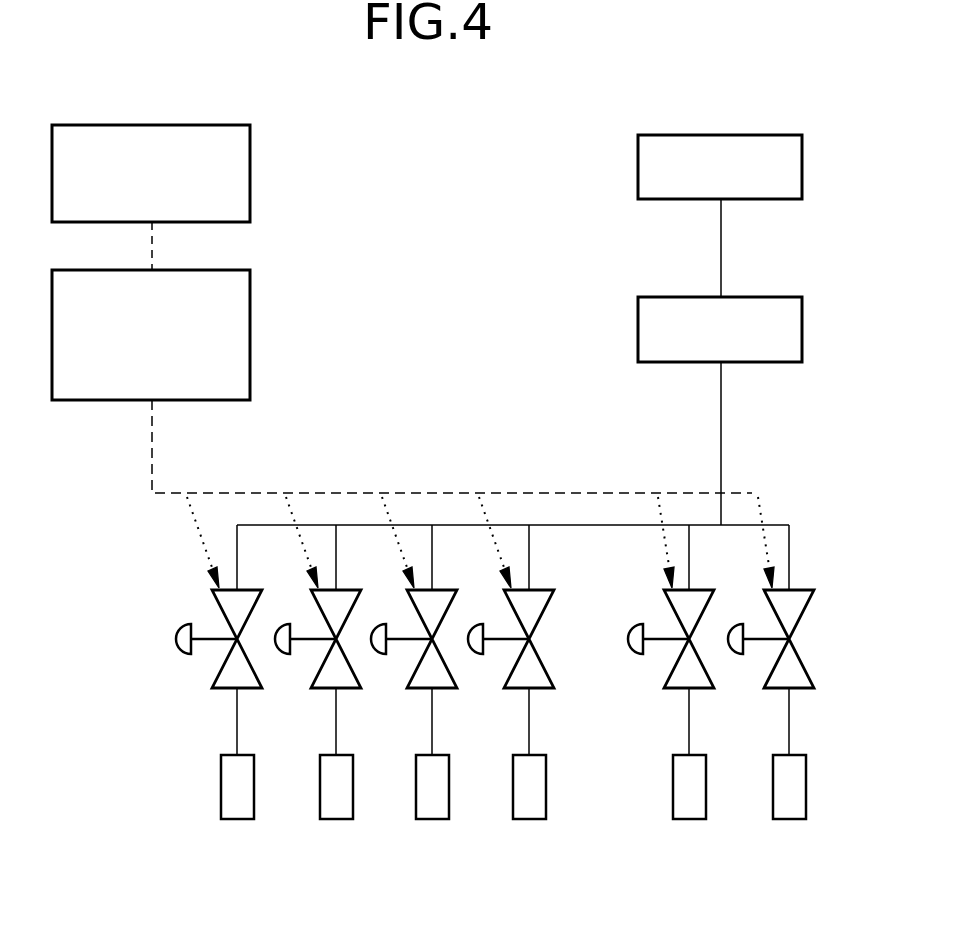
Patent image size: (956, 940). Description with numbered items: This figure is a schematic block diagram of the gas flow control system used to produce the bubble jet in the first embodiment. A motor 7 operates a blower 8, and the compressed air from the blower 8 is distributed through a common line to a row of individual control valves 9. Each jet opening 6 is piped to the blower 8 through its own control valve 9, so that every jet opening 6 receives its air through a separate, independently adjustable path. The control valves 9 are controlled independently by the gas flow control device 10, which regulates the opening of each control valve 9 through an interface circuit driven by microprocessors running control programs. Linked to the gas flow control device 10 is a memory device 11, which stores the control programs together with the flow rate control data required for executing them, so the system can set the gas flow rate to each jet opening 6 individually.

The jet opening 6 is at (239, 820).
The motor 7 is at (638, 176).
The blower 8 is at (638, 336).
The control valve 9 is at (182, 655).
The gas flow control device 10 is at (251, 337).
The memory device 11 is at (251, 180).